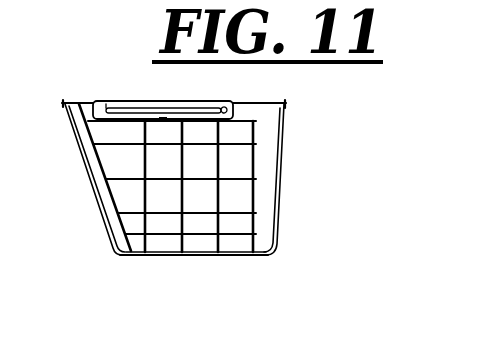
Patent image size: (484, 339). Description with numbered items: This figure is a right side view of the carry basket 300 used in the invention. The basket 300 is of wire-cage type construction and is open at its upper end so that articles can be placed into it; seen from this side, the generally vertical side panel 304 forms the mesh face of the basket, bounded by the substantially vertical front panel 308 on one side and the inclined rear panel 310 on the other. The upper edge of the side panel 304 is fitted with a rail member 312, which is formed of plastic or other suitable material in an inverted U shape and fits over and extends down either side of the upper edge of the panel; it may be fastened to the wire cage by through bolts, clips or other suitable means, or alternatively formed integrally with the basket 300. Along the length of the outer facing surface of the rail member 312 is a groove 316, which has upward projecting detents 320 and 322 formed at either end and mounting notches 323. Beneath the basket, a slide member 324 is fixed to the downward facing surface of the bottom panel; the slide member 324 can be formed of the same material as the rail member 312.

The basket 300 is at (198, 187).
The side panel 304 is at (221, 197).
The front panel 308 is at (283, 132).
The rear panel 310 is at (96, 197).
The rail member 312 is at (100, 117).
The groove 316 is at (190, 118).
The upward projecting detent 320 is at (234, 109).
The upward projecting detent 322 is at (101, 102).
The mounting notch 323 is at (163, 119).
The slide member 324 is at (234, 256).